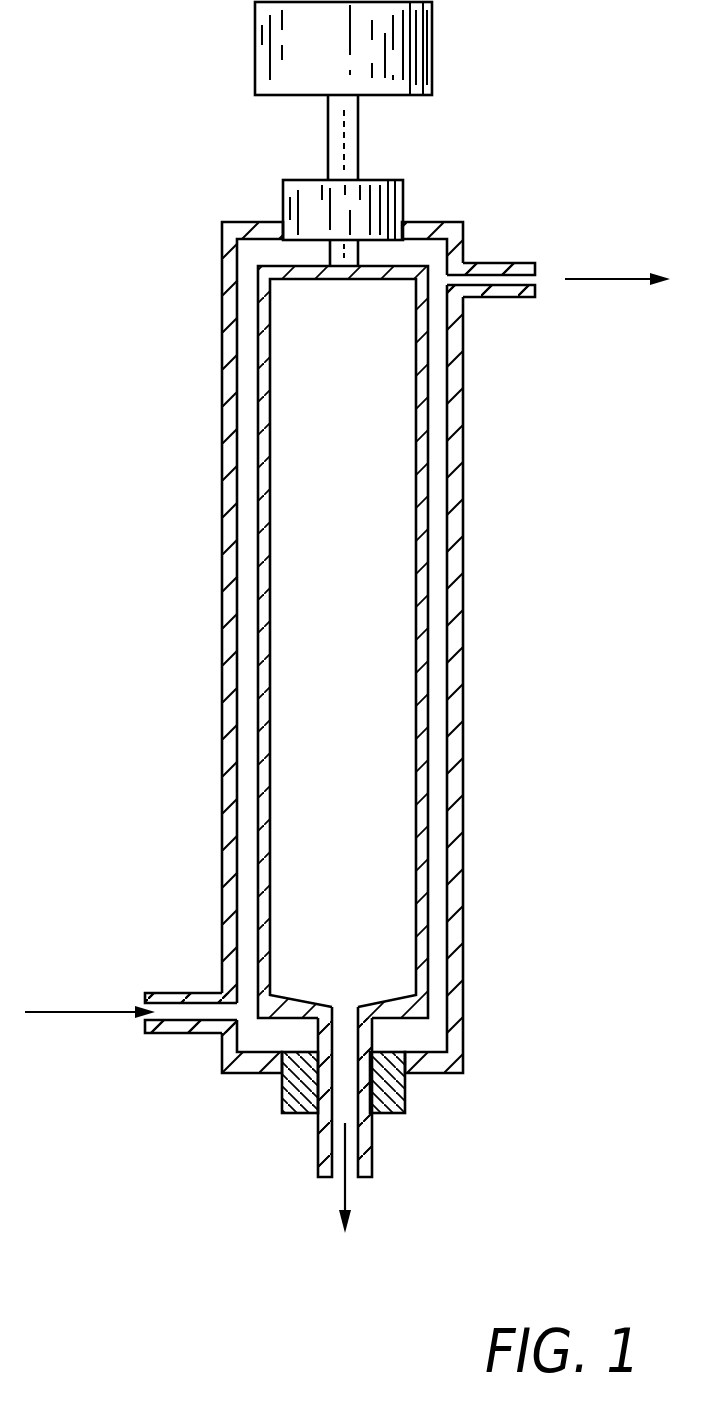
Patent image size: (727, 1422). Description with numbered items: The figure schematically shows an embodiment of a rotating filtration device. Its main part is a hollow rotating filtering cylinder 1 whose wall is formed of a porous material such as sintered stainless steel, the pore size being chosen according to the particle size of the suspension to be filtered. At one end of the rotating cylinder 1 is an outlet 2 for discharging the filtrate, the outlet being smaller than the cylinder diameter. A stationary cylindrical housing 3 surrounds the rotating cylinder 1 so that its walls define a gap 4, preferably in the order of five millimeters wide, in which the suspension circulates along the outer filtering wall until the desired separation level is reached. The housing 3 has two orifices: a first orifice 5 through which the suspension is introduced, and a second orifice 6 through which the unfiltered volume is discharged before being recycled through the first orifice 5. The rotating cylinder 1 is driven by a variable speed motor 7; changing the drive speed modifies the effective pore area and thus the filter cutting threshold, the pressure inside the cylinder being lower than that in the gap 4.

The rotating filtering cylinder 1 is at (428, 665).
The outlet 2 is at (357, 1183).
The stationary cylindrical housing 3 is at (465, 588).
The gap 4 is at (438, 507).
The first orifice 5 is at (138, 997).
The second orifice 6 is at (545, 268).
The variable speed motor 7 is at (432, 56).